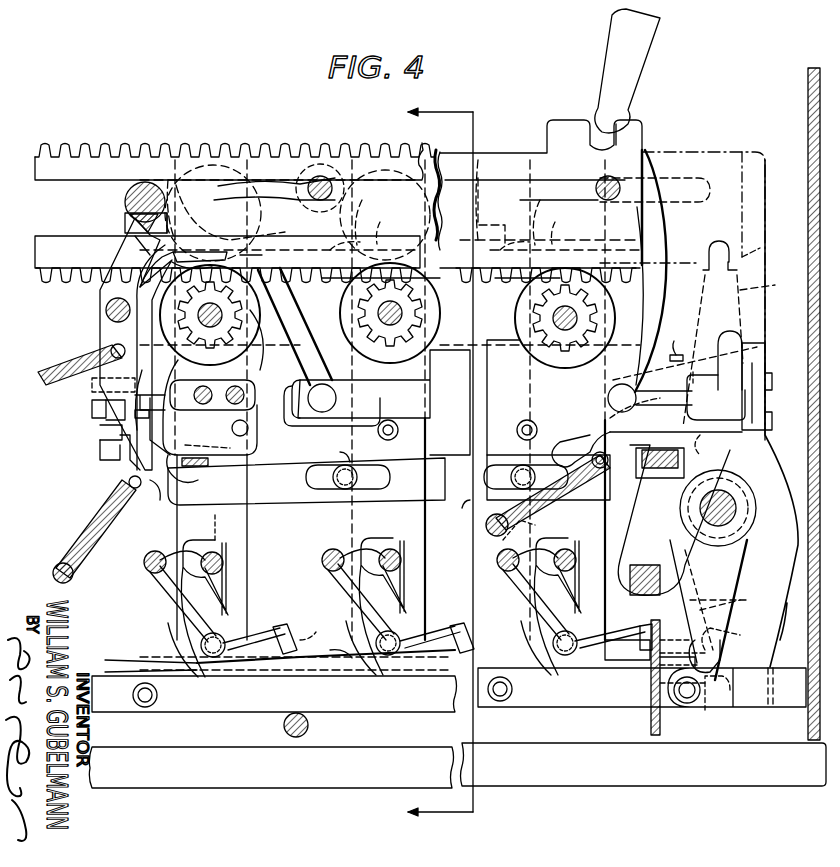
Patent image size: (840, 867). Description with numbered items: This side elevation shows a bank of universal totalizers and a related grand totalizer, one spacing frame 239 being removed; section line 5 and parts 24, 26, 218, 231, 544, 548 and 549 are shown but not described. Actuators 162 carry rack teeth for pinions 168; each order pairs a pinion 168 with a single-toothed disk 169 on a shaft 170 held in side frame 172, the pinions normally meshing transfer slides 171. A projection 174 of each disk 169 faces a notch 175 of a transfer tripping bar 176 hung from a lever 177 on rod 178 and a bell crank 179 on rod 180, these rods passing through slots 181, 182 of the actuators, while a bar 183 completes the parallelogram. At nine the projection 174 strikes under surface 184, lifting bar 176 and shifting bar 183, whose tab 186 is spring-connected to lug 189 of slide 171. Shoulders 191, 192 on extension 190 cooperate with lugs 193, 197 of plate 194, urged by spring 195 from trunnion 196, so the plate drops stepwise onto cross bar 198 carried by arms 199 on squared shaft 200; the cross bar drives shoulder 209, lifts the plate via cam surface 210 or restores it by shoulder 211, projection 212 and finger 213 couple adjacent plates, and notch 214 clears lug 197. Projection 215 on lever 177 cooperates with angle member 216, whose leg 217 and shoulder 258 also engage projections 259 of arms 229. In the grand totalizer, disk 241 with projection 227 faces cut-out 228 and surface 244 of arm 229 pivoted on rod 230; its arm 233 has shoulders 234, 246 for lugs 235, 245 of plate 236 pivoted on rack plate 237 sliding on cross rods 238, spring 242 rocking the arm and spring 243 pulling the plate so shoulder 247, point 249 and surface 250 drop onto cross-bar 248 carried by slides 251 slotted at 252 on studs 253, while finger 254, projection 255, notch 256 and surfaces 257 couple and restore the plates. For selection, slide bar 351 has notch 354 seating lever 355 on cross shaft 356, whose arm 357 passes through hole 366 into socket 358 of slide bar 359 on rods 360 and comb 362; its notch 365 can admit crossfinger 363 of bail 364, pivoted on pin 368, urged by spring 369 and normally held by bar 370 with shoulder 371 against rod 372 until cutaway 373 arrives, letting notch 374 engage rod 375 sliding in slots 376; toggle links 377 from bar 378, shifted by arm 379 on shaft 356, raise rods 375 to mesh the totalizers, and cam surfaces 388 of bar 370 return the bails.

The section line 5- 5 is at (429, 463).
The base plate 24 is at (457, 765).
The side wall 26 is at (806, 94).
The totalizer actuator 162 is at (670, 134).
The pinion 168 is at (186, 332).
The single toothed disk 169 is at (438, 320).
The short shaft 170 is at (535, 326).
The transfer slide 171 is at (503, 397).
The side frame 172 is at (477, 529).
The projection 174 is at (432, 288).
The notch 175 is at (457, 222).
The transfer tripping bar 176 is at (436, 154).
The lever 177 is at (319, 347).
The pivot rod 178 is at (318, 178).
The bell crank 179 is at (650, 281).
The pivot rod 180 is at (624, 190).
The elongated slot 181 is at (300, 150).
The elongated slot 182 is at (491, 202).
The bar 183 is at (390, 400).
The under surface 184 is at (458, 238).
The tab 186 is at (400, 432).
The lug 189 is at (517, 432).
The extension 190 is at (760, 445).
The shoulder 191 is at (706, 378).
The shoulder 192 is at (760, 355).
The lug 193 is at (750, 338).
The plate 194 is at (685, 365).
The spring 195 is at (516, 530).
The trunnion 196 is at (486, 525).
The lug 197 is at (684, 342).
The cross bar 198 is at (648, 471).
The arm 199 is at (674, 520).
The squared shaft 200 is at (636, 571).
The shoulder 209 is at (718, 444).
The cam surface 210 is at (642, 428).
The shoulder 211 is at (604, 473).
The straight projection 212 is at (792, 378).
The inclined overturned finger 213 is at (780, 420).
The notch 214 is at (716, 397).
The projection 215 is at (175, 220).
The angle member 216 is at (128, 192).
The leg 217 is at (156, 261).
The block 218 is at (125, 222).
The projection 227 is at (153, 357).
The cut-out portion 228 is at (200, 253).
The arm 229 is at (112, 285).
The rod 230 is at (105, 313).
The frame 231 is at (209, 519).
The arm 233 is at (153, 389).
The shoulder 234 is at (92, 405).
The overturned lug 235 is at (100, 383).
The plate 236 is at (156, 426).
The rack plate 237 is at (212, 388).
The cross rod 238 is at (232, 390).
The spacing frame 239 is at (735, 614).
The disk 241 is at (272, 340).
The spring 242 is at (60, 356).
The spring 243 is at (84, 539).
The surface 244 is at (236, 256).
The lug 245 is at (153, 389).
The shoulder 246 is at (120, 460).
The shoulder 247 is at (213, 463).
The cross-bar 248 is at (200, 480).
The point 249 is at (208, 465).
The surface 250 is at (221, 442).
The slide 251 is at (306, 481).
The elongated slot 252 is at (372, 483).
The stud 253 is at (397, 476).
The inclined overturned finger 254 is at (92, 414).
The projection 255 is at (100, 450).
The notch 256 is at (100, 430).
The surface 257 is at (147, 494).
The shoulder 258 is at (128, 206).
The projection 259 is at (135, 238).
The slide bar 351 is at (750, 228).
The notch 354 is at (740, 258).
The lever 355 is at (745, 298).
The cross shaft 356 is at (745, 500).
The arm 357 is at (725, 642).
The socket 358 is at (690, 654).
The slide bar 359 is at (533, 664).
The supporting rod 360 is at (308, 730).
The comb 362 is at (648, 760).
The crossfinger 363 is at (472, 634).
The bail 364 is at (333, 569).
The notch 365 is at (283, 690).
The hole 366 is at (744, 589).
The pin 368 is at (434, 626).
The spring 369 is at (420, 610).
The slide bar 370 is at (80, 659).
The shoulder 371 is at (150, 570).
The fixed rod 372 is at (146, 553).
The cutaway portion 373 is at (599, 715).
The notch 374 is at (340, 533).
The rod 375 is at (228, 562).
The slot 376 is at (205, 554).
The toggle link 377 is at (170, 640).
The slide bar 378 is at (449, 690).
The arm 379 is at (732, 578).
The cam surface 388 is at (325, 646).
The slot 544 is at (476, 228).
The lever 548 is at (627, 71).
The slot 549 is at (623, 123).